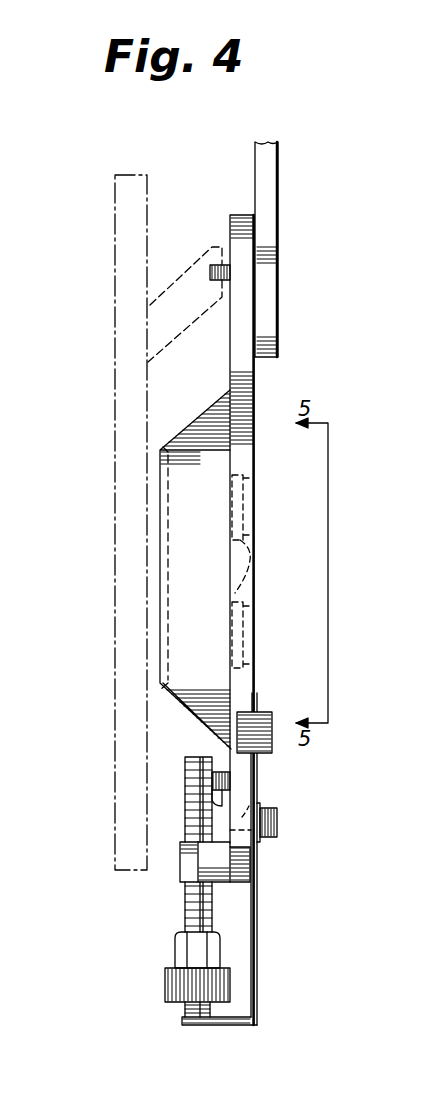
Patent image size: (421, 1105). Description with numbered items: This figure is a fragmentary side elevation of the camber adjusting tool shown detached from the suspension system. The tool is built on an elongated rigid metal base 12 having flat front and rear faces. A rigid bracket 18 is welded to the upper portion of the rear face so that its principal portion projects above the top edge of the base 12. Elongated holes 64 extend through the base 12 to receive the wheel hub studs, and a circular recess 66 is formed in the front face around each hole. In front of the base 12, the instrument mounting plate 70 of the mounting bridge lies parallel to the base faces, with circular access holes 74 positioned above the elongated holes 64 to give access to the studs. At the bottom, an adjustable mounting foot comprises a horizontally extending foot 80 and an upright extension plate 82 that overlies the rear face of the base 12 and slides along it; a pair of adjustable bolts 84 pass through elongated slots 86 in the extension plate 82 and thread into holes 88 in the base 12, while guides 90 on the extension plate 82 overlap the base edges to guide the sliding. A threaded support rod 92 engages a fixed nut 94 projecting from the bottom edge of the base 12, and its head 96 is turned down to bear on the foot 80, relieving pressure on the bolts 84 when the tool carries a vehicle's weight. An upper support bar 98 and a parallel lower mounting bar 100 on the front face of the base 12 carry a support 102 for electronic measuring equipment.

The base 12 is at (254, 386).
The bracket 18 is at (278, 284).
The elongated holes 64 is at (249, 490).
The circular recess 66 is at (252, 563).
The instrument mounting plate 70 is at (158, 583).
The access holes 74 is at (163, 552).
The foot 80 is at (238, 1016).
The extension plate 82 is at (255, 770).
The adjustable bolts 84 is at (277, 823).
The elongated slots 86 is at (253, 935).
The holes 88 is at (258, 803).
The guides 90 is at (272, 722).
The support rod 92 is at (186, 813).
The fixed nut 94 is at (182, 874).
The head 96 is at (165, 981).
The upper support bar 98 is at (226, 265).
The lower mounting bar 100 is at (230, 784).
The support 102 is at (113, 622).